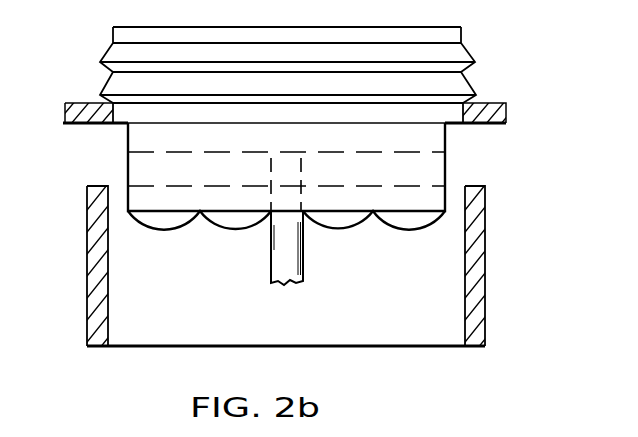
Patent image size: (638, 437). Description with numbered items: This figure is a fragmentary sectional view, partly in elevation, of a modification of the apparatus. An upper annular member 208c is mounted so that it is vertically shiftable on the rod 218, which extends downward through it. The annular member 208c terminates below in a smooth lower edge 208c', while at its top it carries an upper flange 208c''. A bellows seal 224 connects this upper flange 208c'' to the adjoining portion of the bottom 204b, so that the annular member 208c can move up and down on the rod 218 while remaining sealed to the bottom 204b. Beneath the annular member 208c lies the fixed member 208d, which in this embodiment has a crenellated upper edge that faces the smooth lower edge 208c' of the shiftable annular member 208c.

The upper flange 208c'' is at (259, 73).
The bellows seal 224 is at (475, 55).
The bottom 204b is at (490, 103).
The upper annular member 208c is at (324, 167).
The smooth lower edge 208c' is at (286, 235).
The rod 218 is at (275, 275).
The fixed member 208d is at (485, 279).